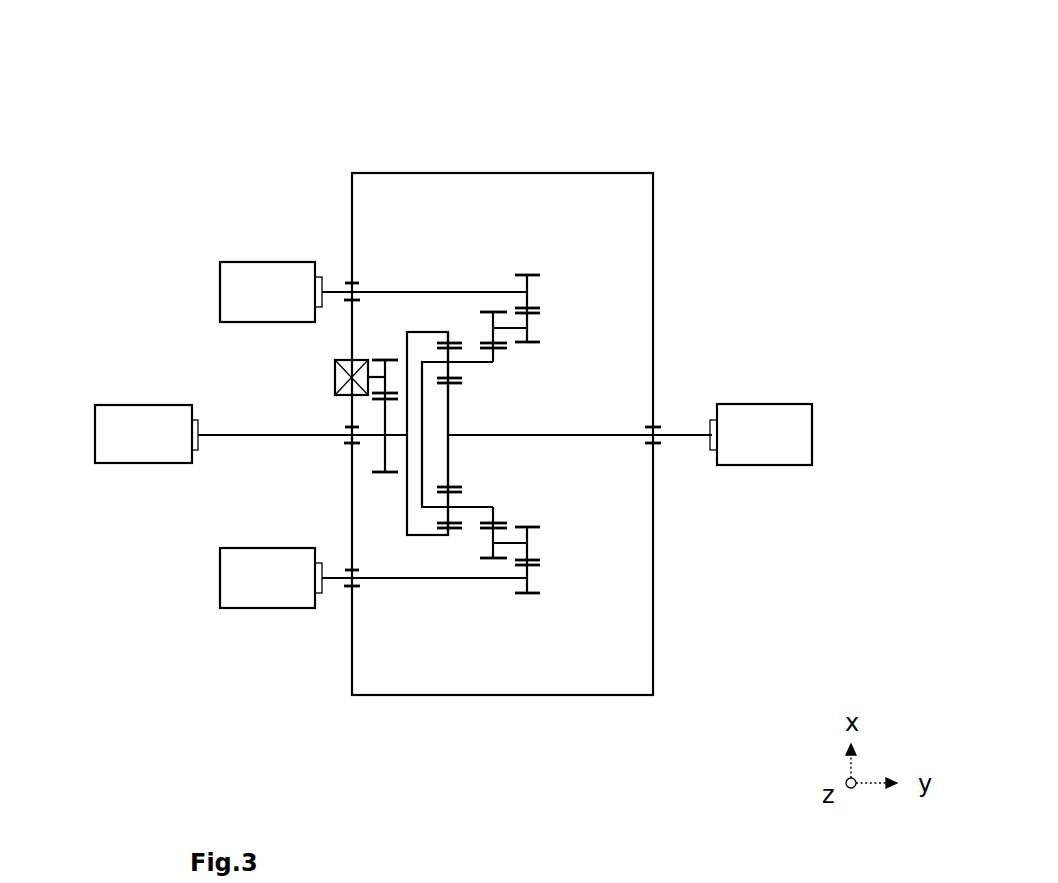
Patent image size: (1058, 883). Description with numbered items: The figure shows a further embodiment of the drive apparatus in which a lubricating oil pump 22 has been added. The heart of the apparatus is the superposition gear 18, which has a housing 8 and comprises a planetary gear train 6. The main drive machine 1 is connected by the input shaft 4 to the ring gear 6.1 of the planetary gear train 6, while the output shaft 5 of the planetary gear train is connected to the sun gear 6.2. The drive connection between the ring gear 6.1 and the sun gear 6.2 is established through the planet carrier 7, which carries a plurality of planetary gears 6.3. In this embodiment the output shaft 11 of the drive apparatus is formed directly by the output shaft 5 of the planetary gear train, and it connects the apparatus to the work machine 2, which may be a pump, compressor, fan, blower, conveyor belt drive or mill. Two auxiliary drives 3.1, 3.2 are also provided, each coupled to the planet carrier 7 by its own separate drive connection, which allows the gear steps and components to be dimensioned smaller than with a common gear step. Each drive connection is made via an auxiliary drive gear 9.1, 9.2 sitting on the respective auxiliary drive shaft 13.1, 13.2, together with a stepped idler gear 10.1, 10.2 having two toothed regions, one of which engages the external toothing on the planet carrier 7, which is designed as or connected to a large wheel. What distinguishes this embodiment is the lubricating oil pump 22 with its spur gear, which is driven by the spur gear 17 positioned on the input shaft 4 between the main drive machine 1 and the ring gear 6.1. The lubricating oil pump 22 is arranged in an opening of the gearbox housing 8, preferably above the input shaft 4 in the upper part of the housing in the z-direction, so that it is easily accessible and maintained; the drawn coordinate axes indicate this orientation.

The main drive machine 1 is at (125, 405).
The work machine 2 is at (790, 404).
The auxiliary drive 3.1 is at (270, 262).
The auxiliary drive 3.2 is at (277, 612).
The input shaft 4 is at (267, 435).
The output shaft of the planetary gear train 5 is at (600, 437).
The planetary gear train 6 is at (421, 451).
The ring gear 6.1 is at (405, 482).
The sun gear 6.2 is at (455, 455).
The planetary gears 6.3 is at (472, 498).
The planet carrier 7 is at (495, 515).
The housing 8 is at (597, 173).
The auxiliary drive gear 9.1 is at (533, 283).
The auxiliary drive gear 9.2 is at (535, 573).
The stepped idler gear 10.1 is at (511, 328).
The stepped idler gear 10.2 is at (513, 533).
The output shaft 11 is at (702, 435).
The auxiliary drive shaft 13.1 is at (467, 292).
The auxiliary drive shaft 13.2 is at (429, 578).
The spur gear 17 is at (385, 415).
The superposition gear 18 is at (668, 287).
The lubricating oil pump 22 is at (333, 378).